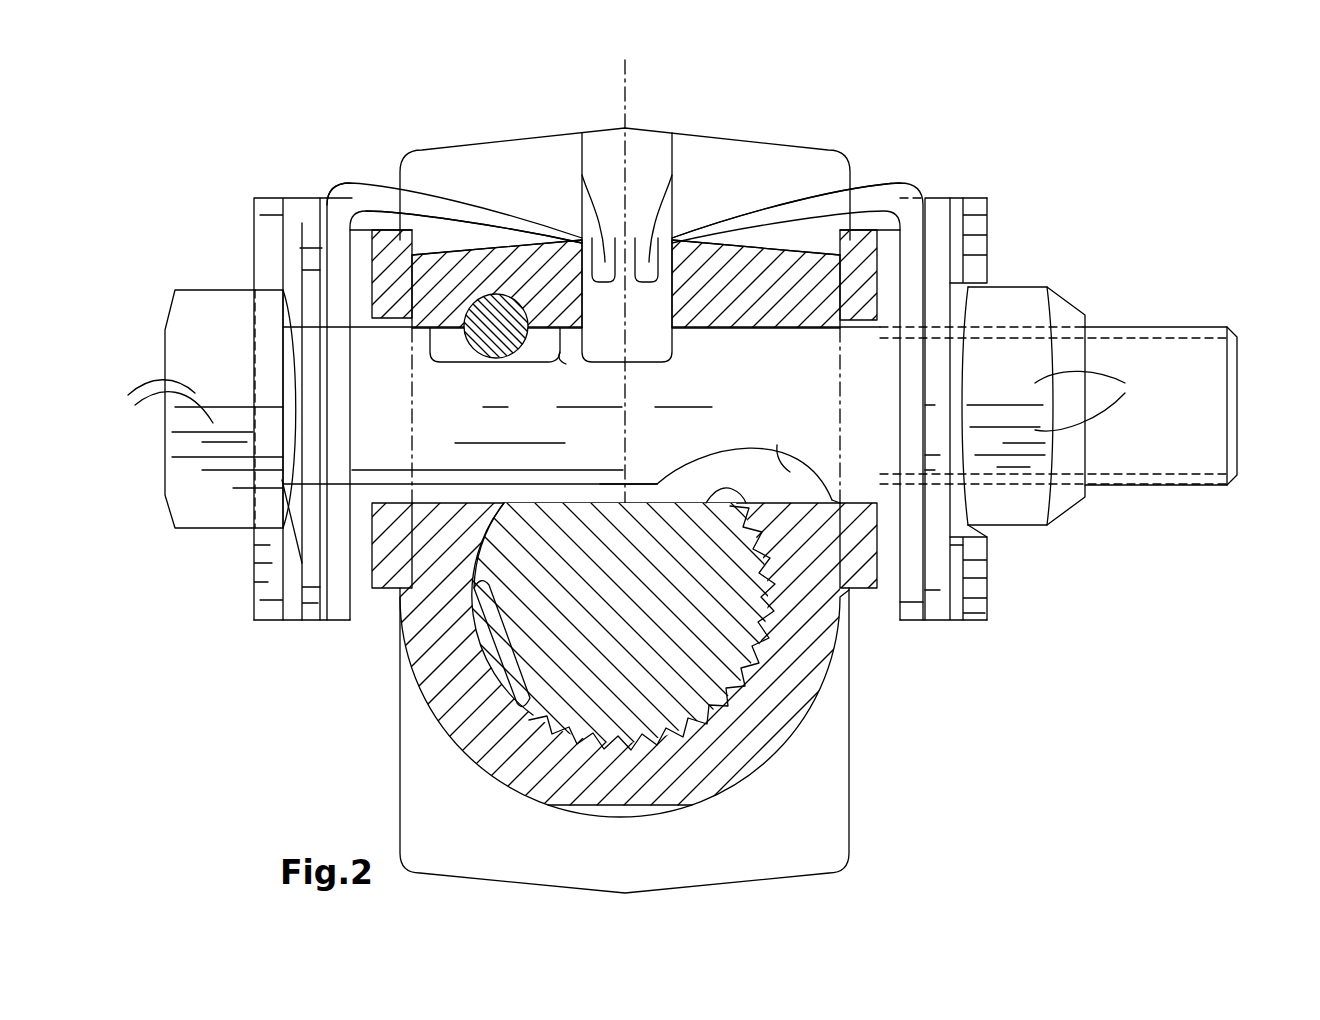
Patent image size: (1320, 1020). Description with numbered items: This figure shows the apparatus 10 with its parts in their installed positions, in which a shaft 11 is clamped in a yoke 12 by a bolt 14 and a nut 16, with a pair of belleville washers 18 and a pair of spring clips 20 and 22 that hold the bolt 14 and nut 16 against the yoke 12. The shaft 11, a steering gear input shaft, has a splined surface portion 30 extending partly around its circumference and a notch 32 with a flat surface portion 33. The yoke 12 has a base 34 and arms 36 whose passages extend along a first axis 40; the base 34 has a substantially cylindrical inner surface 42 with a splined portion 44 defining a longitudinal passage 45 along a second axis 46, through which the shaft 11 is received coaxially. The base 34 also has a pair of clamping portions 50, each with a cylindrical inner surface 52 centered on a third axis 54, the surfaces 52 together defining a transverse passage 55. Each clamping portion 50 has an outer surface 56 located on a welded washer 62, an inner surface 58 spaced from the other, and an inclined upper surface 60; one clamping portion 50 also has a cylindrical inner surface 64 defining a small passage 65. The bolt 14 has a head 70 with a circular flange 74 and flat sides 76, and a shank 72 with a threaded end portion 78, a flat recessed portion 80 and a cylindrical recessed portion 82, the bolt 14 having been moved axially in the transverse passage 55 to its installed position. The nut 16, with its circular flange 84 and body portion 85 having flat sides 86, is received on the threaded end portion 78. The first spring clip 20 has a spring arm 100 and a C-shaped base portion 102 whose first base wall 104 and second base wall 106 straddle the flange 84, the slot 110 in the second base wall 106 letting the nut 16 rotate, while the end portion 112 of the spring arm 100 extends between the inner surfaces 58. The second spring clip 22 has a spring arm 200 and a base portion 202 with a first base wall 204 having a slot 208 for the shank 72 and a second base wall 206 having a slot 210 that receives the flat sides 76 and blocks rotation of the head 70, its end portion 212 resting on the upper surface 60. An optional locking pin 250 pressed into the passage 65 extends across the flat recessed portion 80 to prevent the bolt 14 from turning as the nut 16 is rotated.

The apparatus 10 is at (318, 92).
The shaft 11 is at (492, 632).
The yoke 12 is at (397, 793).
The bolt 14 is at (172, 290).
The nut 16 is at (1068, 300).
The belleville washers 18 is at (370, 380).
The first spring clip 20 is at (888, 180).
The second spring clip 22 is at (346, 192).
The splined surface portion 30 is at (718, 707).
The notch 32 is at (682, 483).
The flat surface portion 33 is at (718, 500).
The base 34 is at (458, 706).
The arms 36 is at (675, 142).
The first axis 40 is at (640, 110).
The inner surface 42 is at (510, 664).
The splined portion 44 is at (546, 702).
The longitudinal passage 45 is at (535, 708).
The second axis 46 is at (633, 587).
The clamping portions 50 is at (470, 283).
The cylindrical inner surface 52 is at (488, 500).
The third axis 54 is at (668, 405).
The transverse passage 55 is at (463, 431).
The outer surface 56 is at (370, 300).
The inner surface 58 is at (583, 300).
The upper surface 60 is at (513, 250).
The washers 62 is at (399, 590).
The cylindrical inner surface 64 is at (440, 345).
The passage 65 is at (488, 345).
The head 70 is at (195, 358).
The shank 72 is at (1240, 414).
The circular flange 74 is at (312, 262).
The flat sides 76 is at (154, 401).
The threaded end portion 78 is at (1162, 328).
The flat recessed portion 80 is at (566, 364).
The cylindrical recessed portion 82 is at (794, 468).
The circular flange 84 is at (975, 232).
The body portion 85 is at (1020, 318).
The flat sides 86 is at (1092, 400).
The spring arm 100 is at (790, 200).
The base portion 102 is at (990, 235).
The first base wall 104 is at (912, 622).
The second base wall 106 is at (975, 622).
The slot 110 is at (990, 530).
The end portion 112 is at (640, 222).
The spring arm 200 is at (440, 212).
The base portion 202 is at (275, 262).
The first base wall 204 is at (340, 608).
The second base wall 206 is at (268, 608).
The slot 208 is at (337, 483).
The slot 210 is at (270, 528).
The end portion 212 is at (582, 175).
The locking pin 250 is at (495, 352).